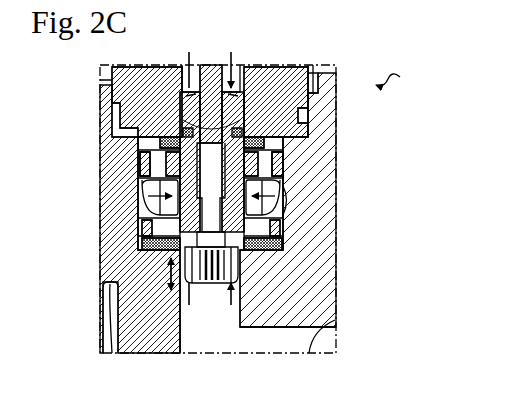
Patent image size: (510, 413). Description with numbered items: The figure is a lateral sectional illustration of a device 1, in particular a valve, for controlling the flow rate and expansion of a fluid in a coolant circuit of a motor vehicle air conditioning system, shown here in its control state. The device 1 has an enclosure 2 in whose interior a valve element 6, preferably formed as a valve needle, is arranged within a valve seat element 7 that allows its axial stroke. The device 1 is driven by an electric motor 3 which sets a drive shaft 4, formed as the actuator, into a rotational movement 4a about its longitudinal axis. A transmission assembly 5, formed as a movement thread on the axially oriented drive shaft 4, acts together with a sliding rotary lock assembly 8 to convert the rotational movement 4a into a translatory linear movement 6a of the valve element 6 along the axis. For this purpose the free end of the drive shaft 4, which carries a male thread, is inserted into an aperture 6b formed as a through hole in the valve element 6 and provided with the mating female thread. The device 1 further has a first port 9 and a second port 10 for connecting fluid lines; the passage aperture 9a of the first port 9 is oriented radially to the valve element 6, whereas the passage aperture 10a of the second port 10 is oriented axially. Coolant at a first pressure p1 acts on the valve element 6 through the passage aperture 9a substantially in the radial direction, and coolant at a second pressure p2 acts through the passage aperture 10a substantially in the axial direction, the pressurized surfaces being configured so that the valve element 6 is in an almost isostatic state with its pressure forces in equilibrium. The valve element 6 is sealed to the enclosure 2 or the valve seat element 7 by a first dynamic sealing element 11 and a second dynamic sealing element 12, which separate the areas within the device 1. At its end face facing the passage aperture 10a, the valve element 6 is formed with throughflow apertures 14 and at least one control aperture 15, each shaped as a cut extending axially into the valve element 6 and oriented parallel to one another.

The device 1 is at (392, 77).
The enclosure 2 is at (288, 112).
The electric motor 3 is at (320, 79).
The drive shaft 4 is at (168, 130).
The transmission assembly 5 is at (168, 130).
The rotational movement 4a is at (198, 118).
The valve element 6 is at (100, 147).
The linear movement 6a is at (116, 298).
The aperture 6b is at (322, 210).
The valve seat element 7 is at (145, 168).
The sliding rotary lock assembly 8 is at (112, 71).
The first port 9 is at (100, 238).
The passage aperture 9a is at (100, 238).
The second port 10 is at (290, 348).
The passage aperture 10a is at (202, 335).
The first dynamic sealing element 11 is at (283, 160).
The second dynamic sealing element 12 is at (285, 232).
The throughflow apertures 14 is at (265, 282).
The control aperture 15 is at (252, 258).
The first pressure p1 is at (148, 196).
The second pressure p2 is at (173, 83).